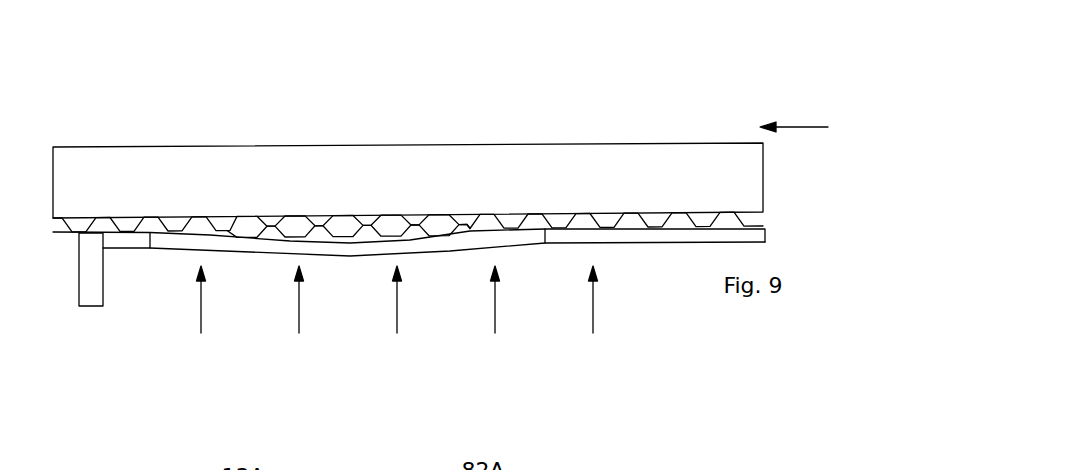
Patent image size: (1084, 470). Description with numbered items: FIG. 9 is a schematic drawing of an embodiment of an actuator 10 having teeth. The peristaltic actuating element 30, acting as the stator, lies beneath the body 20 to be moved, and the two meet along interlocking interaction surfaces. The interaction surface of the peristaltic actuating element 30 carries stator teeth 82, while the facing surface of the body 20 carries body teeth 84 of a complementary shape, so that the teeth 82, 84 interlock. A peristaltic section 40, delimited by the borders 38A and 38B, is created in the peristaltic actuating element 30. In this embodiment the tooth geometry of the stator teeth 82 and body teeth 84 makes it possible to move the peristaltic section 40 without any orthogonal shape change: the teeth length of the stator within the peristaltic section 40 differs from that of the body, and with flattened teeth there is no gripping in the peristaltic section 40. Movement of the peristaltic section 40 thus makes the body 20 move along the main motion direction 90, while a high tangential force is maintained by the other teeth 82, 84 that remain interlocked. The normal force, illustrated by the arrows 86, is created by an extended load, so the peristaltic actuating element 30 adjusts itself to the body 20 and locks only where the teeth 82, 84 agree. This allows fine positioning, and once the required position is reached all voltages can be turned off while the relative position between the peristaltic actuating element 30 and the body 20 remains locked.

The sandwich panel assembly 10 is at (600, 85).
The body 20 is at (203, 146).
The peristaltic actuating element 30 is at (597, 237).
The border 38A is at (148, 250).
The border 38B is at (547, 245).
The peristaltic section 40 is at (355, 256).
The stator teeth 82 is at (439, 231).
The body teeth 84 is at (407, 217).
The arrows 86 is at (397, 313).
The main motion direction 90 is at (794, 111).